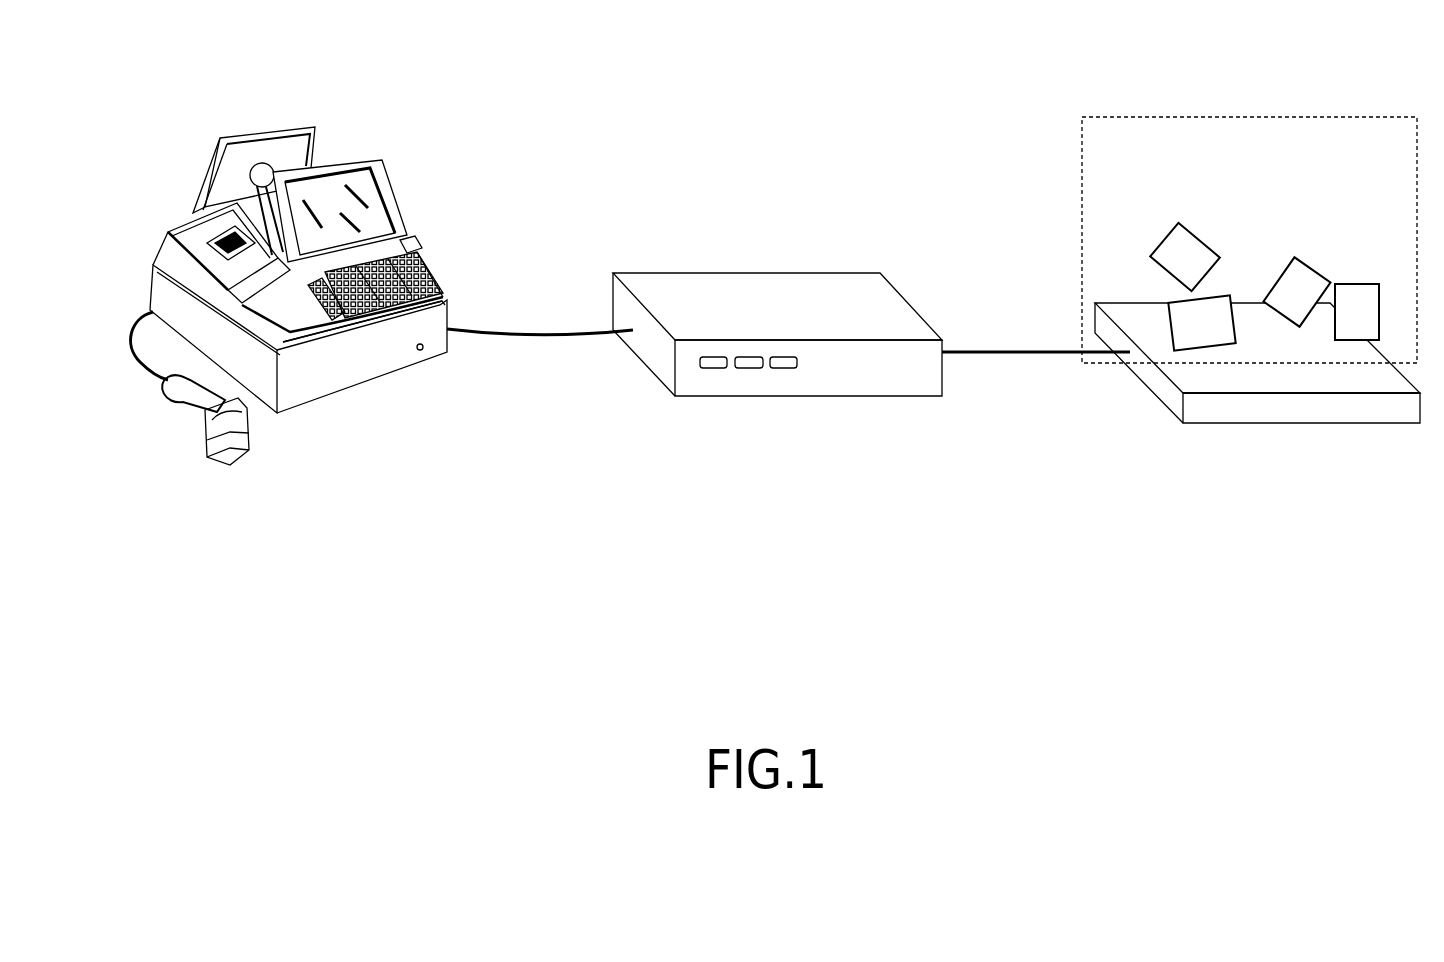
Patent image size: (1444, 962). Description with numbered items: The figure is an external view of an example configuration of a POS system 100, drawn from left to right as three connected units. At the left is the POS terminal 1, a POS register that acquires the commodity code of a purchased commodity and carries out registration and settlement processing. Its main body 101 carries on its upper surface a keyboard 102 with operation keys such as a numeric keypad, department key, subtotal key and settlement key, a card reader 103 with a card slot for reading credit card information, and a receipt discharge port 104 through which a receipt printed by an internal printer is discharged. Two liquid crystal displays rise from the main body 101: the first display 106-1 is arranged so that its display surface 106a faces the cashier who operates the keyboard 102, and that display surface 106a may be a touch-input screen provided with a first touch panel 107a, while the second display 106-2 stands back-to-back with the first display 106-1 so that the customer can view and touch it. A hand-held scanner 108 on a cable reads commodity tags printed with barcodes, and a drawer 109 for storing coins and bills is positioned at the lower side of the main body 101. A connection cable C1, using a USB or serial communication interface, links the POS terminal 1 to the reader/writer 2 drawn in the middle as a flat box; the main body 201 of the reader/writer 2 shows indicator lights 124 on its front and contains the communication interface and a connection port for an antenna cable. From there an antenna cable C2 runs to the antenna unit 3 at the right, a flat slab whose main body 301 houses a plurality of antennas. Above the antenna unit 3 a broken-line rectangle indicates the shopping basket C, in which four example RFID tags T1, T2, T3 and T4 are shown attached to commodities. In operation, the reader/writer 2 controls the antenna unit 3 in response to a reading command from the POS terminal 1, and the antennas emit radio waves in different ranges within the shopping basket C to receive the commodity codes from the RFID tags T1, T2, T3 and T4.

The POS system 100 is at (212, 42).
The POS terminal 1 is at (407, 132).
The main body 101 is at (157, 242).
The keyboard 102 is at (440, 283).
The card reader 103 is at (415, 250).
The receipt discharge port 104 is at (195, 247).
The first display 106-1 is at (347, 160).
The second display 106-2 is at (208, 146).
The display surface 106a is at (365, 208).
The first touch panel 107a is at (390, 225).
The hand-held scanner 108 is at (186, 413).
The drawer 109 is at (152, 282).
The reader/writer 2 is at (812, 235).
The main body 201 is at (707, 292).
The indicator lights 124 is at (714, 372).
The connection cable C1 is at (565, 330).
The antenna cable C2 is at (1007, 350).
The antenna unit 3 is at (1328, 423).
The main body 301 is at (1245, 410).
The shopping basket C is at (1352, 117).
The RFID tag T1 is at (1185, 257).
The RFID tag T2 is at (1296, 291).
The RFID tag T3 is at (1201, 322).
The RFID tag T4 is at (1357, 312).